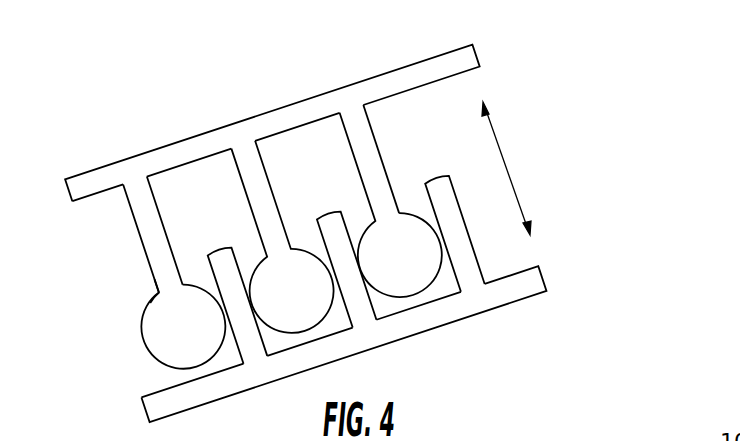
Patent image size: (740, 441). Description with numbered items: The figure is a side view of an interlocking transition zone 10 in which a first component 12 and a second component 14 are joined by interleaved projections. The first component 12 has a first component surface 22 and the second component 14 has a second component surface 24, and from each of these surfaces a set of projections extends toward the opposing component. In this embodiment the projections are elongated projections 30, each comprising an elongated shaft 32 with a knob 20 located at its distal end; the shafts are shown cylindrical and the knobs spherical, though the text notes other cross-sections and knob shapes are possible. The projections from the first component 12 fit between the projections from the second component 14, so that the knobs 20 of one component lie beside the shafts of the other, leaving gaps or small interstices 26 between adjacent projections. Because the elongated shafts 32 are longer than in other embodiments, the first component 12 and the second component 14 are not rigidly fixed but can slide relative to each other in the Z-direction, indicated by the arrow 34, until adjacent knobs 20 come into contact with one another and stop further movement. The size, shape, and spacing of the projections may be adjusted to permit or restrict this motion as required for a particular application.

The interlocking transition zone 10 is at (363, 211).
The first component 12 is at (325, 289).
The second component 14 is at (303, 216).
The knob 20 is at (184, 327).
The first component surface 22 is at (408, 320).
The second component surface 24 is at (272, 123).
The interstices 26 is at (381, 159).
The elongated projections 30 is at (153, 291).
The elongated shafts 32 is at (152, 235).
The arrow 34 is at (513, 183).